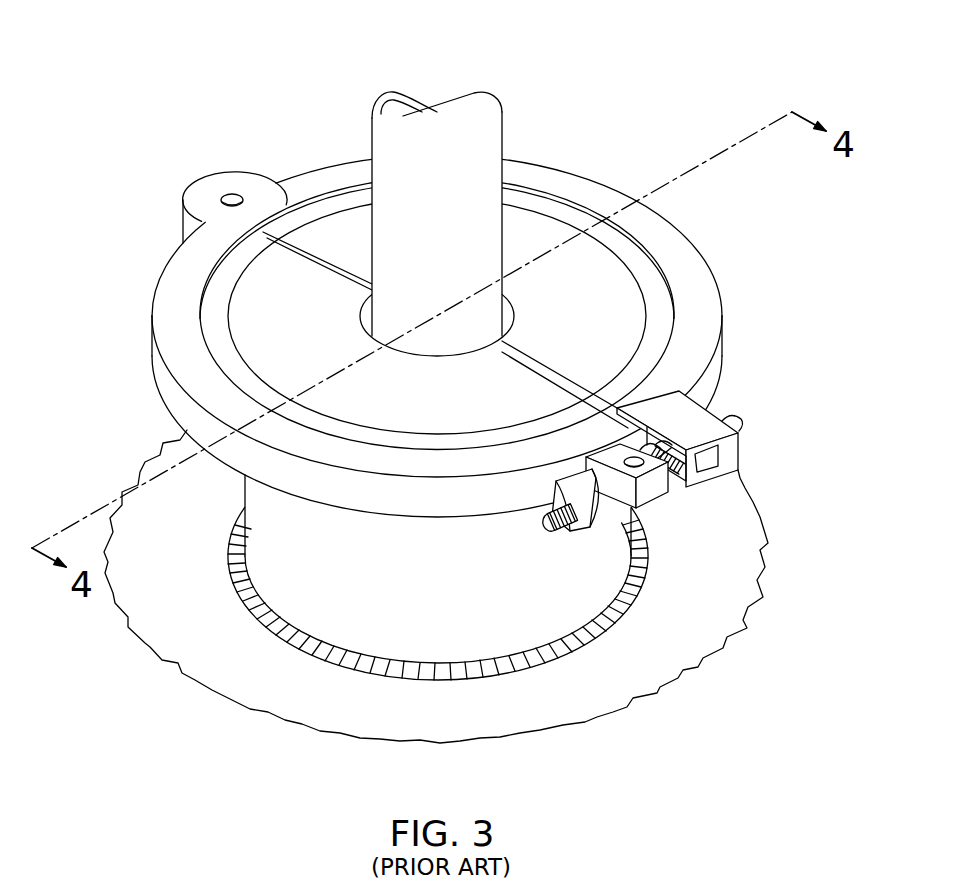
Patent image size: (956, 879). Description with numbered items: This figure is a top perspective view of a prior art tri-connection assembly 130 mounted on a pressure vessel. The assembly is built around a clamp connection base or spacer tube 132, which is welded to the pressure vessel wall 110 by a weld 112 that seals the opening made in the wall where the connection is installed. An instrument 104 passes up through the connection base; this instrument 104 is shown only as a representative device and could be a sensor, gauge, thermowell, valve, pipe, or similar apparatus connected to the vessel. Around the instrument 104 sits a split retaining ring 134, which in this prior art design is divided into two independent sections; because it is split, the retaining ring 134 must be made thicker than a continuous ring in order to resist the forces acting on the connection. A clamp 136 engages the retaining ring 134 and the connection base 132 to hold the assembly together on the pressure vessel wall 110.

The prior art tri-connection assembly 130 is at (225, 88).
The instrument 104 is at (371, 131).
The split retaining ring 134 is at (531, 232).
The clamp 136 is at (712, 291).
The pressure vessel wall 110 is at (193, 548).
The weld 112 is at (270, 620).
The clamp connection base or spacer tube 132 is at (605, 588).